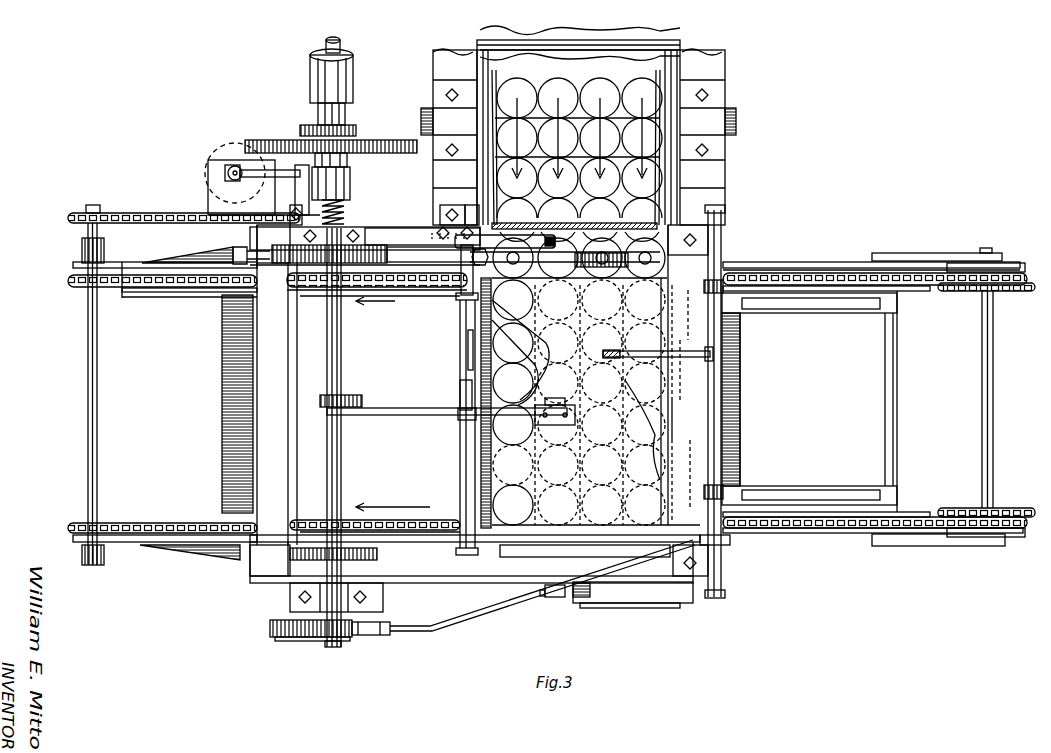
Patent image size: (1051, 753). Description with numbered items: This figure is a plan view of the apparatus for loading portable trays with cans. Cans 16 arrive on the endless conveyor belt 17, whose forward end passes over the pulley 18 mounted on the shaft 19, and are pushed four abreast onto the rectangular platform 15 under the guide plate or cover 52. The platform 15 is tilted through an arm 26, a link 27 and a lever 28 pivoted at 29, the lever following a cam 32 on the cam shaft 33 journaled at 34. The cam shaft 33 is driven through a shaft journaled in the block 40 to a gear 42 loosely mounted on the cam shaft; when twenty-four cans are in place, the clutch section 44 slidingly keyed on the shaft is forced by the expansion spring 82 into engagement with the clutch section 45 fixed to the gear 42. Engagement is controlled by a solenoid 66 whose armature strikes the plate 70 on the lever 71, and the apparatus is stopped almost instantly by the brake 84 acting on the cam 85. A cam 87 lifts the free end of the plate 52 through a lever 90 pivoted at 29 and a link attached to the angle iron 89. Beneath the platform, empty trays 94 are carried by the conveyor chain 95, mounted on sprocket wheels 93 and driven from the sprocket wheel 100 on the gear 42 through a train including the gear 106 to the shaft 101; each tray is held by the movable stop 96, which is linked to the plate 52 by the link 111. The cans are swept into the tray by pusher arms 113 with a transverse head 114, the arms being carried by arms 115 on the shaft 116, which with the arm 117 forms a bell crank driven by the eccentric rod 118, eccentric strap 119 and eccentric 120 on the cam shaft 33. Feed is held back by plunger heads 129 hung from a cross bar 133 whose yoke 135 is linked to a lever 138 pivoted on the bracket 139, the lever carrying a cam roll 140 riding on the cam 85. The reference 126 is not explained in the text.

The platform 15 is at (480, 365).
The cans 16 is at (577, 301).
The endless conveyor belt 17 is at (680, 35).
The pulley 18 is at (505, 48).
The shaft 19 is at (730, 115).
The arm 26 is at (632, 603).
The link 27 is at (592, 592).
The lever 28 is at (440, 540).
The pivot 29 is at (460, 455).
The cam 32 is at (295, 562).
The cam shaft 33 is at (341, 470).
The journal 34 is at (300, 590).
The block 40 is at (353, 80).
The gear 42 is at (400, 153).
The clutch section 44 is at (350, 185).
The clutch section 45 is at (346, 162).
The guide plate or cover 52 is at (596, 375).
The solenoid 66 is at (235, 150).
The plate 70 is at (223, 166).
The lever 71 is at (284, 176).
The expansion spring 82 is at (345, 212).
The brake 84 is at (278, 263).
The cam 85 is at (300, 290).
The cam 87 is at (362, 400).
The angle iron 89 is at (578, 428).
The lever 90 is at (435, 415).
The sprocket wheels 93 is at (78, 285).
The tray 94 is at (475, 318).
The conveyor chain 95 is at (420, 290).
The movable stop 96 is at (468, 345).
The sprocket wheel 100 is at (356, 130).
The shaft 101 is at (100, 404).
The gear 106 is at (185, 213).
The link 111 is at (562, 597).
The pusher arms 113 is at (852, 310).
The head 114 is at (655, 360).
The arms 115 is at (786, 320).
The shaft 116 is at (717, 597).
The arm 117 is at (730, 540).
The eccentric rod 118 is at (473, 612).
The eccentric strap 119 is at (353, 640).
The eccentric 120 is at (300, 640).
The feed chain 126 is at (375, 290).
The plunger heads 129 is at (602, 278).
The cross bar 133 is at (640, 278).
The yoke 135 is at (548, 278).
The lever 138 is at (396, 243).
The bracket 139 is at (470, 208).
The cam roll 140 is at (345, 292).